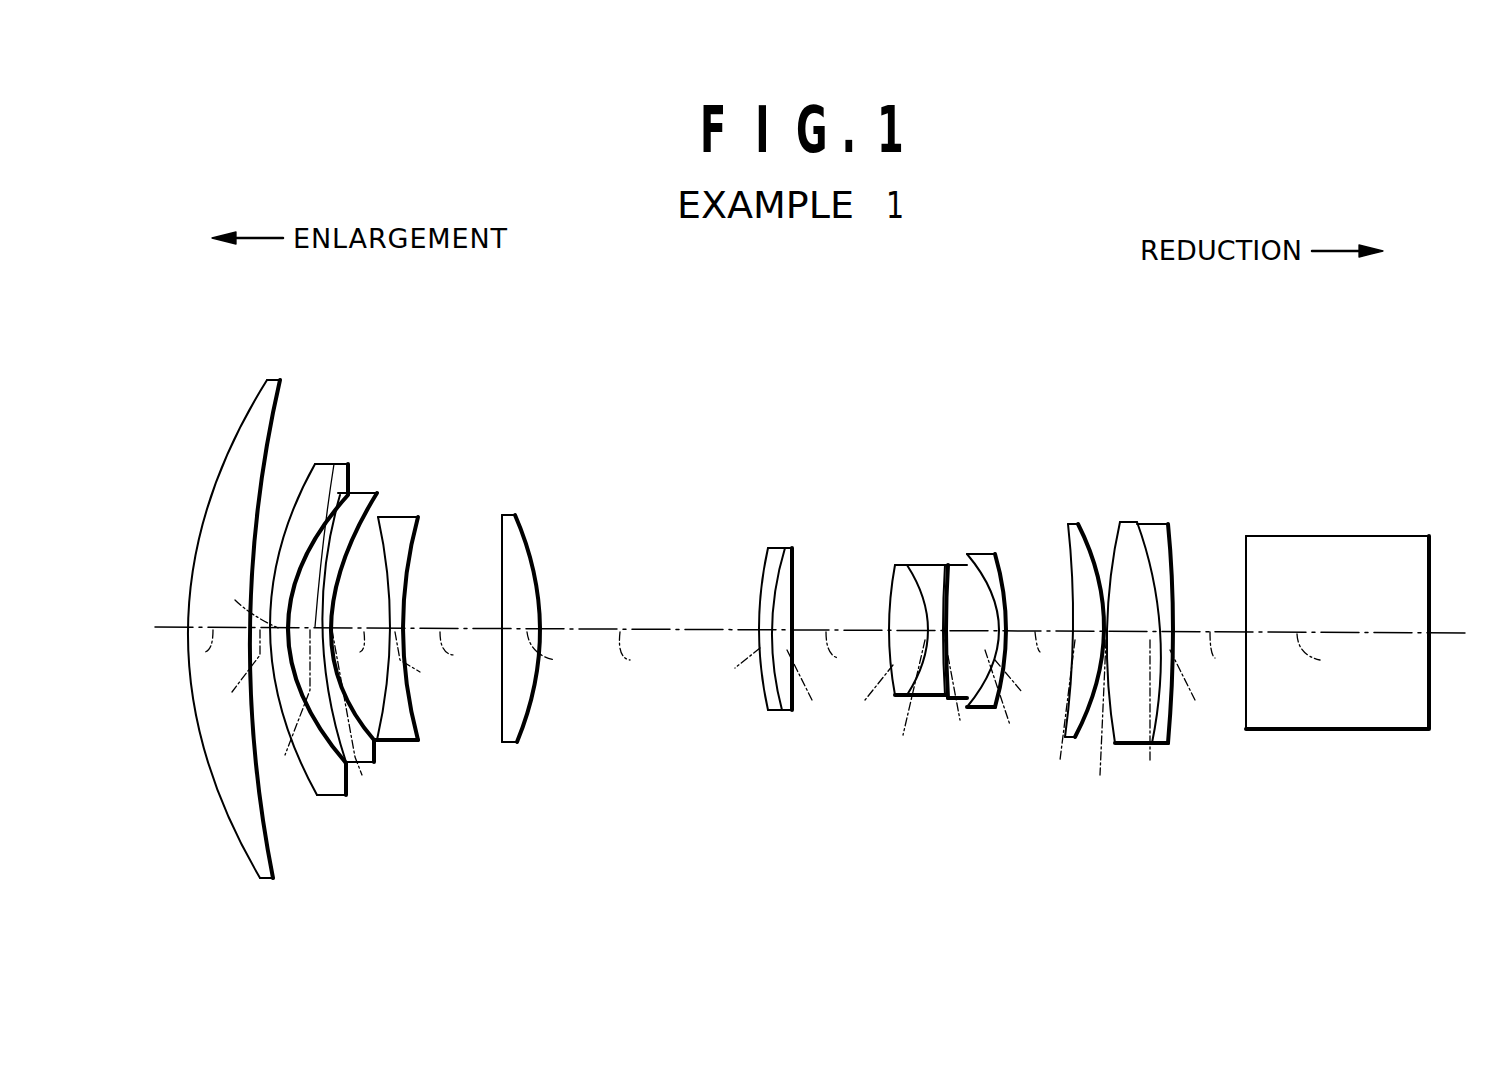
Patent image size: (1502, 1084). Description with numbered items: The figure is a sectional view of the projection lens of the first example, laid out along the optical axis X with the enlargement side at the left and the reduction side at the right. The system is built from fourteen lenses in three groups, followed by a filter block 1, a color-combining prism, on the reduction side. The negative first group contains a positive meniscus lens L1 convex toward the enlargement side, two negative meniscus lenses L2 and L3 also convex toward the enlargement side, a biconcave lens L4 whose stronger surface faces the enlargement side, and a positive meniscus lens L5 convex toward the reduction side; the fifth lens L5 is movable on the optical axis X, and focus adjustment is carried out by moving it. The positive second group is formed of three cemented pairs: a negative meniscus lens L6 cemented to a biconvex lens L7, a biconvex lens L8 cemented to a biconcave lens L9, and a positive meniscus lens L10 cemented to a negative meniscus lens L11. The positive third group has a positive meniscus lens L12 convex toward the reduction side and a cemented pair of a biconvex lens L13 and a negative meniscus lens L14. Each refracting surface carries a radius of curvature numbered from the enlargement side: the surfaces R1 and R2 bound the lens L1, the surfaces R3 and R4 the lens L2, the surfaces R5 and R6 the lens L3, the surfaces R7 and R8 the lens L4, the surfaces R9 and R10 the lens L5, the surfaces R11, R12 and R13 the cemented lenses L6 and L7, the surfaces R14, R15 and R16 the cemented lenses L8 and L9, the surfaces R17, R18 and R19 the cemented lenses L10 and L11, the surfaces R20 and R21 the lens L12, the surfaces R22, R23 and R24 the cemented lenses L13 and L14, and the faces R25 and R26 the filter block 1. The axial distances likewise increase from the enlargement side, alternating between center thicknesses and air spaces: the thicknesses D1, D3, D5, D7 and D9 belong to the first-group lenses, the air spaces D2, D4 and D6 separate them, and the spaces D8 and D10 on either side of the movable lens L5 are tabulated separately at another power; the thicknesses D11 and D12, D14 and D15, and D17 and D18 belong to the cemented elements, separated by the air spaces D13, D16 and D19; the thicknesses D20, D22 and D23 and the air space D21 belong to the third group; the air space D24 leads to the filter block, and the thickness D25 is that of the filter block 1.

The filter block 1 is at (1356, 628).
The optical axis X is at (1465, 633).
The positive meniscus lens L1 is at (243, 598).
The negative meniscus lens L2 is at (324, 580).
The negative meniscus lens L3 is at (369, 596).
The biconcave lens L4 is at (420, 600).
The positive meniscus lens L5 is at (523, 599).
The negative meniscus lens L6 is at (746, 595).
The biconvex lens L7 is at (820, 604).
The biconvex lens L8 is at (900, 578).
The biconcave lens L9 is at (996, 587).
The positive meniscus lens L10 is at (1003, 575).
The negative meniscus lens L11 is at (1018, 597).
The positive meniscus lens L12 is at (1077, 587).
The biconvex lens L13 is at (1177, 596).
The negative meniscus lens L14 is at (1180, 606).
The lens surface radius of curvature R1 is at (235, 440).
The lens surface radius of curvature R2 is at (267, 500).
The lens surface radius of curvature R3 is at (311, 470).
The lens surface radius of curvature R4 is at (350, 470).
The lens surface radius of curvature R5 is at (328, 575).
The lens surface radius of curvature R6 is at (362, 540).
The lens surface radius of curvature R7 is at (388, 580).
The lens surface radius of curvature R8 is at (414, 545).
The lens surface radius of curvature R9 is at (502, 578).
The lens surface radius of curvature R10 is at (535, 552).
The lens surface radius of curvature R11 is at (762, 592).
The lens surface radius of curvature R12 is at (778, 580).
The lens surface radius of curvature R13 is at (793, 590).
The lens surface radius of curvature R14 is at (890, 600).
The lens surface radius of curvature R15 is at (915, 580).
The lens surface radius of curvature R16 is at (948, 610).
The lens surface radius of curvature R17 is at (948, 565).
The lens surface radius of curvature R18 is at (985, 585).
The lens surface radius of curvature R19 is at (1006, 608).
The lens surface radius of curvature R20 is at (1070, 545).
The lens surface radius of curvature R21 is at (1086, 545).
The lens surface radius of curvature R22 is at (1110, 578).
The lens surface radius of curvature R23 is at (1148, 562).
The lens surface radius of curvature R24 is at (1173, 575).
The surface radius of curvature R25 is at (1246, 722).
The surface radius of curvature R26 is at (1430, 705).
The center thickness D1 is at (209, 653).
The air space D2 is at (235, 675).
The center thickness D3 is at (241, 603).
The air space D4 is at (287, 707).
The center thickness D5 is at (364, 715).
The air space D6 is at (361, 651).
The center thickness D7 is at (424, 662).
The air space D8 is at (460, 652).
The center thickness D9 is at (555, 653).
The air space D10 is at (642, 656).
The center thickness D11 is at (730, 663).
The center thickness D12 is at (815, 687).
The air space D13 is at (851, 655).
The center thickness D14 is at (875, 693).
The center thickness D15 is at (905, 698).
The air space D16 is at (965, 693).
The center thickness D17 is at (1014, 698).
The center thickness D18 is at (1026, 686).
The air space D19 is at (1048, 654).
The center thickness D20 is at (1062, 710).
The air space D21 is at (1103, 718).
The center thickness D22 is at (1152, 710).
The center thickness D23 is at (1198, 687).
The air space D24 is at (1218, 655).
The center thickness D25 is at (1330, 659).